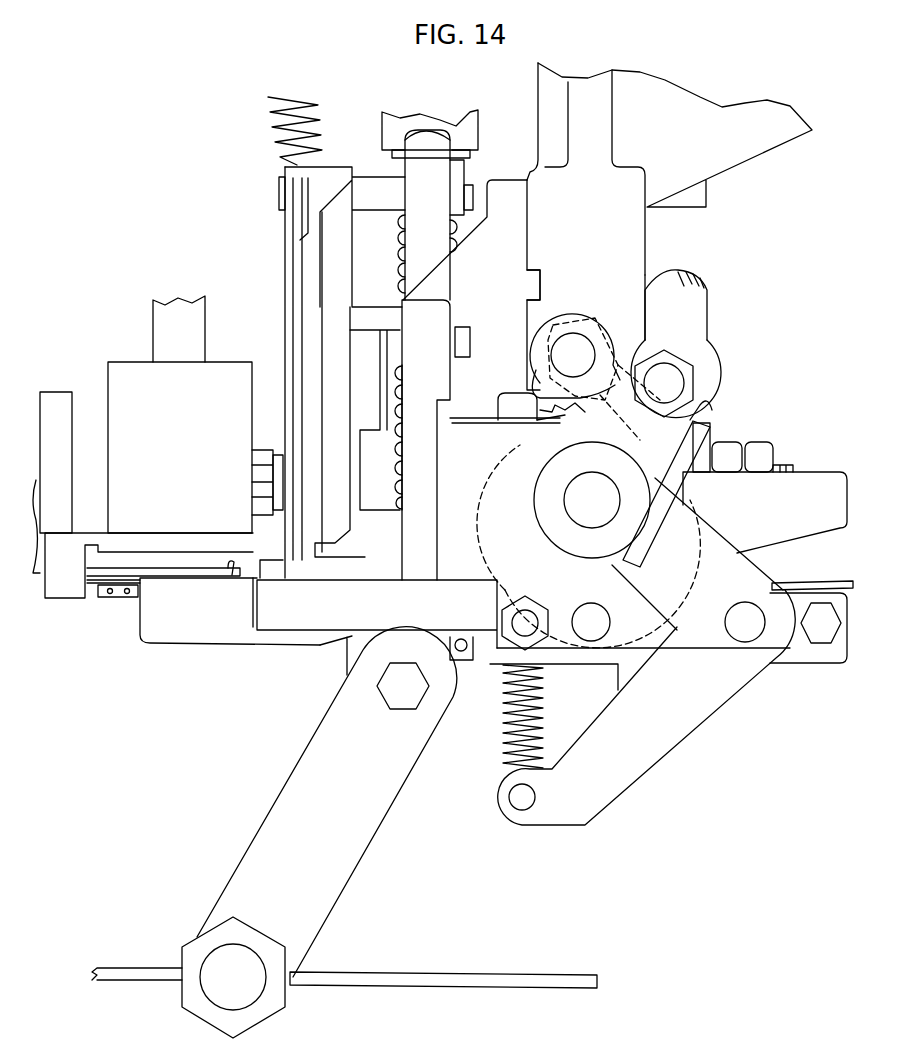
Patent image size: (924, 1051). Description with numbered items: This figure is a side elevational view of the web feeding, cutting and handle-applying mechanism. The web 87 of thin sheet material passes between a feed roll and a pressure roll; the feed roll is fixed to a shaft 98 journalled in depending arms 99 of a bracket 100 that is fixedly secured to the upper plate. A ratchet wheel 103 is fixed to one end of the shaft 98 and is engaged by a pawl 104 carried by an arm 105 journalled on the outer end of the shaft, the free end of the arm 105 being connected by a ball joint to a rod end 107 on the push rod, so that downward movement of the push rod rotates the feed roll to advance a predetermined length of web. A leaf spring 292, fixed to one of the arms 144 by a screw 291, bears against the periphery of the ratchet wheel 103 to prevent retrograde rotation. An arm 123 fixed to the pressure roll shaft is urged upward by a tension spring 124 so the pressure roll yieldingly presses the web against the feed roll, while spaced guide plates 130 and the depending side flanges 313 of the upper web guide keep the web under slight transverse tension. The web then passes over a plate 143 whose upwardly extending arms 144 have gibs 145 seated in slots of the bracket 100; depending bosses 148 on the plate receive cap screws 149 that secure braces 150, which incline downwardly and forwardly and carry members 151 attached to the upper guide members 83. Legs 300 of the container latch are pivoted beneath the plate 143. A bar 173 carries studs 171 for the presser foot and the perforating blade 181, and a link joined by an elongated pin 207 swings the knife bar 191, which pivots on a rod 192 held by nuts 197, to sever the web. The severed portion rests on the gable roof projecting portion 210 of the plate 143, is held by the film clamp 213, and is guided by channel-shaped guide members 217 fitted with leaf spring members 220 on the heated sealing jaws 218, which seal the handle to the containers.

The upper guide members 83 is at (139, 970).
The web 87 is at (818, 582).
The shaft 98 is at (604, 510).
The depending arms 99 is at (600, 247).
The bracket 100 is at (676, 137).
The ratchet wheel 103 is at (568, 446).
The pawl 104 is at (607, 350).
The arm 105 is at (637, 446).
The rod end 107 is at (680, 302).
The arm 123 is at (660, 732).
The tension spring 124 is at (540, 733).
The guide plates 130 is at (796, 655).
The plate 143 is at (398, 617).
The arms 144 is at (428, 510).
The gibs 145 is at (536, 292).
The depending bosses 148 is at (347, 650).
The cap screws 149 is at (392, 700).
The braces 150 is at (321, 861).
The members 151 is at (273, 942).
The studs 171 is at (410, 231).
The bar 173 is at (470, 140).
The perforating blade 181 is at (392, 390).
The knife bar 191 is at (312, 365).
The rod 192 is at (785, 466).
The nuts 197 is at (733, 445).
The elongated pin 207 is at (372, 185).
The gable roof projecting portion 210 is at (172, 622).
The film clamp 213 is at (232, 580).
The guide members 217 is at (79, 568).
The sealing jaws 218 is at (197, 426).
The leaf spring member 220 is at (126, 598).
The screw 291 is at (468, 330).
The leaf spring 292 is at (485, 418).
The legs 300 is at (588, 663).
The depending side flanges 313 is at (766, 521).